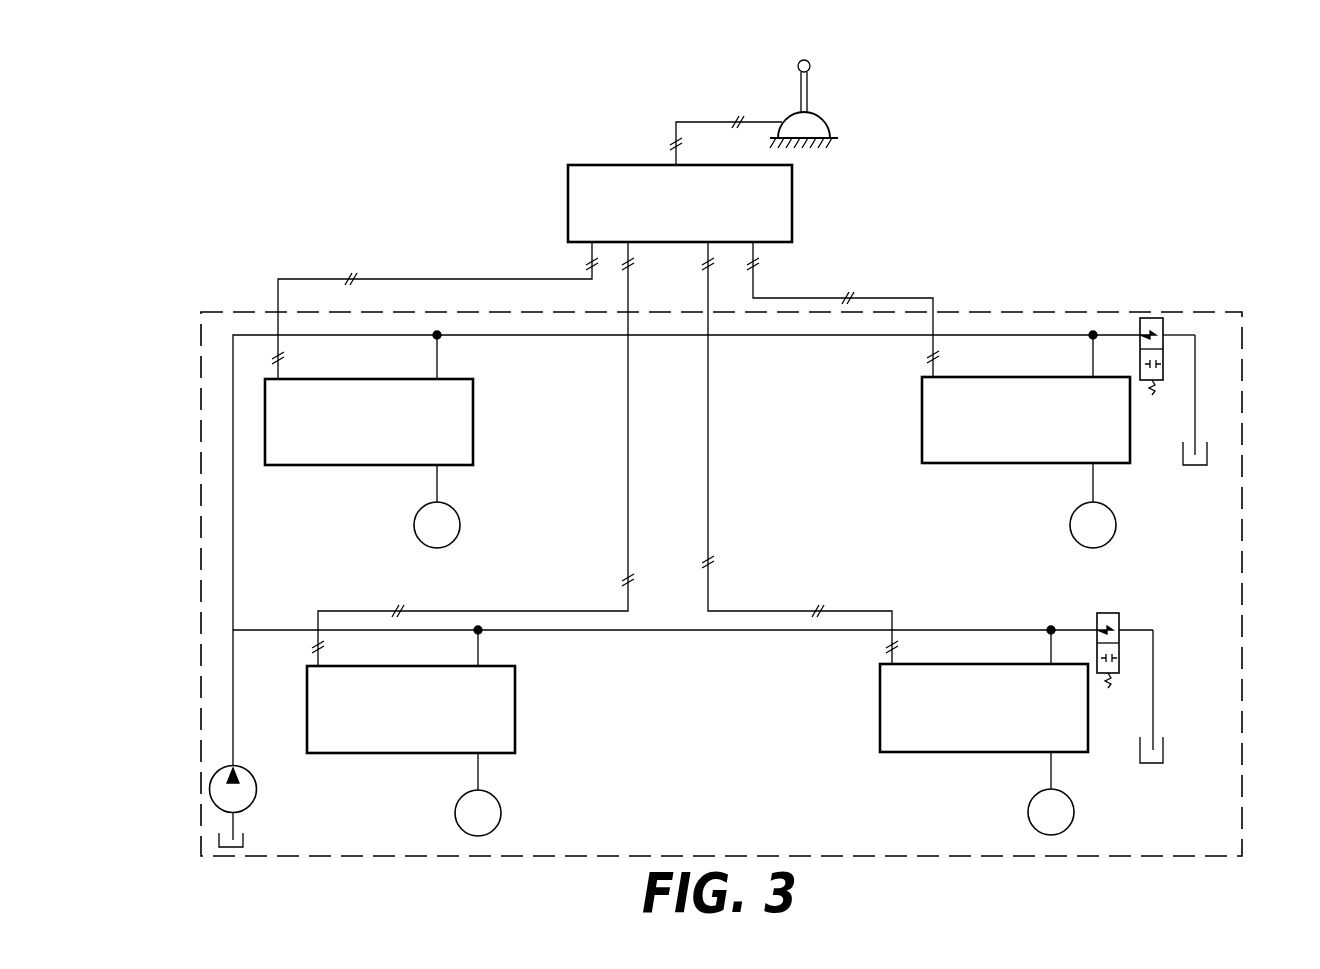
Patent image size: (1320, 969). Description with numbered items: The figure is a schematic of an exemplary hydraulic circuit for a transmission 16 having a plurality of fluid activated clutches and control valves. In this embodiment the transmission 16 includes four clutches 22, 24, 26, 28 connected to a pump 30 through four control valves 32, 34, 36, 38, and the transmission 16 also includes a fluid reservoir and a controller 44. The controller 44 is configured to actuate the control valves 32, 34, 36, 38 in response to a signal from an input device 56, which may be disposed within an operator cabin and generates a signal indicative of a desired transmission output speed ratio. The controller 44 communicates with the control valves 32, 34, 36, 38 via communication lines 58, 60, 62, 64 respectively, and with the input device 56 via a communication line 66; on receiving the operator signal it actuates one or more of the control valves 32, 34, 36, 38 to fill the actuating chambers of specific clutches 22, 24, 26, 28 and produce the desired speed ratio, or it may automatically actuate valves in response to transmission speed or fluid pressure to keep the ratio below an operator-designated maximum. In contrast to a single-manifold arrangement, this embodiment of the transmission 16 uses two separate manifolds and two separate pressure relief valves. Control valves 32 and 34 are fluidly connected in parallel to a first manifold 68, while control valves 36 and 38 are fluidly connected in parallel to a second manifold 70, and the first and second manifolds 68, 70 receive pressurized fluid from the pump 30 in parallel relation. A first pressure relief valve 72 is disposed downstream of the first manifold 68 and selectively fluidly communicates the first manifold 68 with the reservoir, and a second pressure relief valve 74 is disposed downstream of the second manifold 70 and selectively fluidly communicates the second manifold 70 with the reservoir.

The transmission 16 is at (1244, 800).
The clutch 22 is at (460, 525).
The clutch 24 is at (1116, 525).
The clutch 26 is at (501, 813).
The clutch 28 is at (1074, 812).
The pump 30 is at (254, 783).
The control valve 32 is at (369, 398).
The control valve 34 is at (1026, 397).
The control valve 36 is at (411, 689).
The control valve 38 is at (984, 689).
The controller 44 is at (793, 215).
The input device 56 is at (810, 68).
The communication line 58 is at (405, 279).
The communication line 60 is at (885, 298).
The communication line 62 is at (629, 525).
The communication line 64 is at (709, 450).
The communication line 66 is at (672, 124).
The first manifold 68 is at (240, 335).
The second manifold 70 is at (278, 630).
The first pressure relief valve 72 is at (1160, 322).
The second pressure relief valve 74 is at (1120, 616).